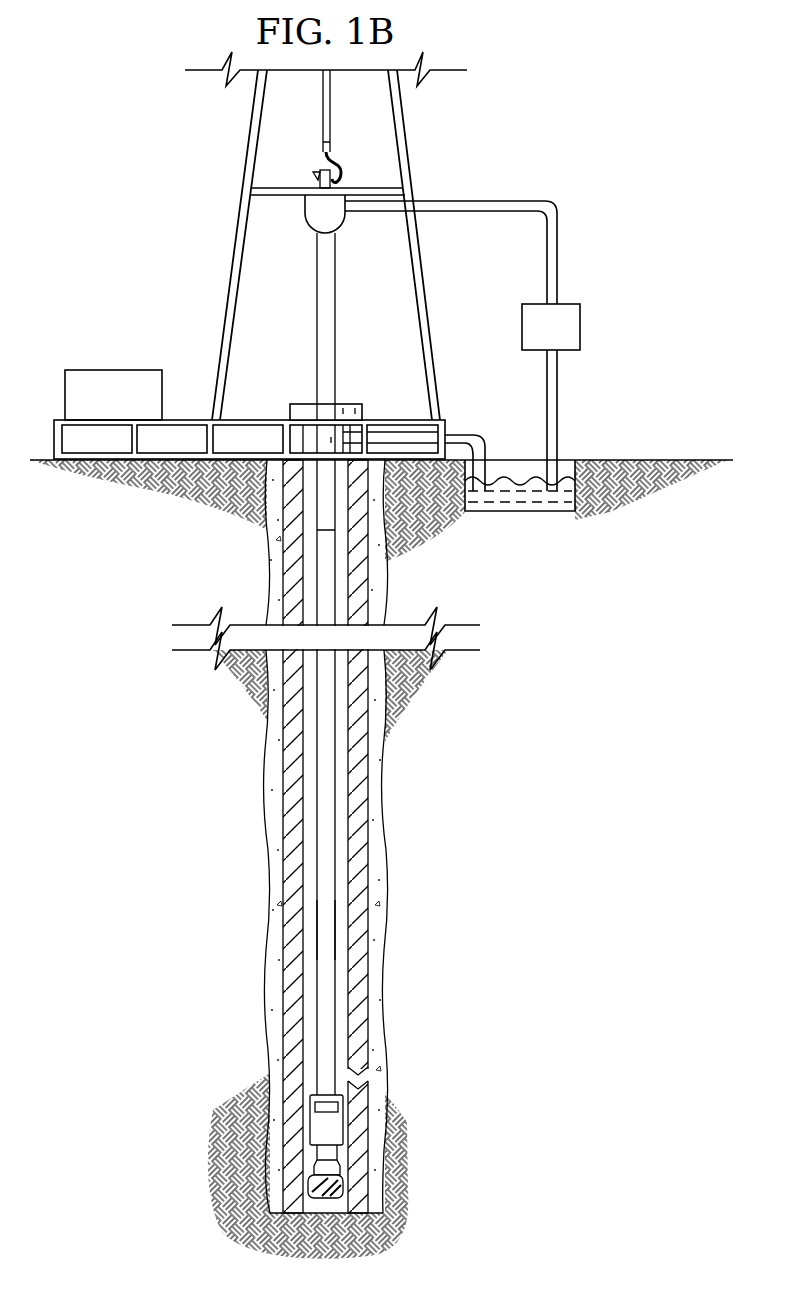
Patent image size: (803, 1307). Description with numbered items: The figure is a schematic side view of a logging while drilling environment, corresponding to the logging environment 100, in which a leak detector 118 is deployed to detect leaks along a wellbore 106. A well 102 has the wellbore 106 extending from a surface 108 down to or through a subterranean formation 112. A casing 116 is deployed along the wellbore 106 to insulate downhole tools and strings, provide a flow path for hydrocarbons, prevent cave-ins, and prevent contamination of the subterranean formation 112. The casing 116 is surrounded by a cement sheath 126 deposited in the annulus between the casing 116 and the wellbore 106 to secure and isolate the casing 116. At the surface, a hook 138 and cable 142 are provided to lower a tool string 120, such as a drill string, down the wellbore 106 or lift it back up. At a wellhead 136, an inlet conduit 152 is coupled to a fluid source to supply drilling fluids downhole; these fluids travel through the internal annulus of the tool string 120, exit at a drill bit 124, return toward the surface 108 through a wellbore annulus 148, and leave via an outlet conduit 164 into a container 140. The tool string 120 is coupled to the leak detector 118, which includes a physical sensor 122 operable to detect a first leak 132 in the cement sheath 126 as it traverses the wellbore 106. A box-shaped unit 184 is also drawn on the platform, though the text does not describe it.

The wireline logging environment 100 is at (176, 225).
The well 102 is at (347, 396).
The wellbore 106 is at (382, 811).
The surface 108 is at (672, 458).
The subterranean formation 112 is at (597, 747).
The casing 116 is at (362, 886).
The leak detector 118 is at (335, 1126).
The tool string 120 is at (316, 813).
The physical sensor 122 is at (315, 1108).
The drill bit 124 is at (340, 1183).
The cement sheath 126 is at (378, 766).
The first leak 132 is at (396, 1073).
The wellhead 136 is at (306, 403).
The hook 138 is at (345, 170).
The container 140 is at (510, 500).
The cable 142 is at (320, 130).
The wellbore annulus 148 is at (310, 928).
The inlet conduit 152 is at (522, 201).
The outlet conduit 164 is at (455, 432).
The control unit 184 is at (112, 370).